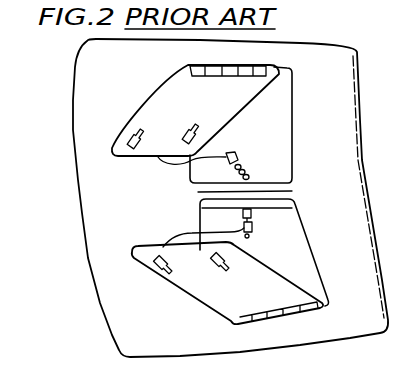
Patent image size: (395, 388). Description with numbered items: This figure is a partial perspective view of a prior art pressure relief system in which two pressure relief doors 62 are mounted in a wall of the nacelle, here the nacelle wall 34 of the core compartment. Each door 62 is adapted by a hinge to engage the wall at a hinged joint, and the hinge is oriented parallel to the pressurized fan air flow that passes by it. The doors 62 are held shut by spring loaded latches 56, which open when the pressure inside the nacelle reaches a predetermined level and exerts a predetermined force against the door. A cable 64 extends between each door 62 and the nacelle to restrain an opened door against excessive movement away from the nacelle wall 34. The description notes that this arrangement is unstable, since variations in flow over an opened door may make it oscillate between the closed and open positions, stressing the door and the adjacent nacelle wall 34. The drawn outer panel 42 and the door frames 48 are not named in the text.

The nacelle wall 34 is at (346, 198).
The panel 42 is at (105, 203).
The frame 48 is at (287, 121).
The spring loaded latches 56 is at (158, 268).
The doors 62 is at (158, 100).
The cable 64 is at (195, 233).